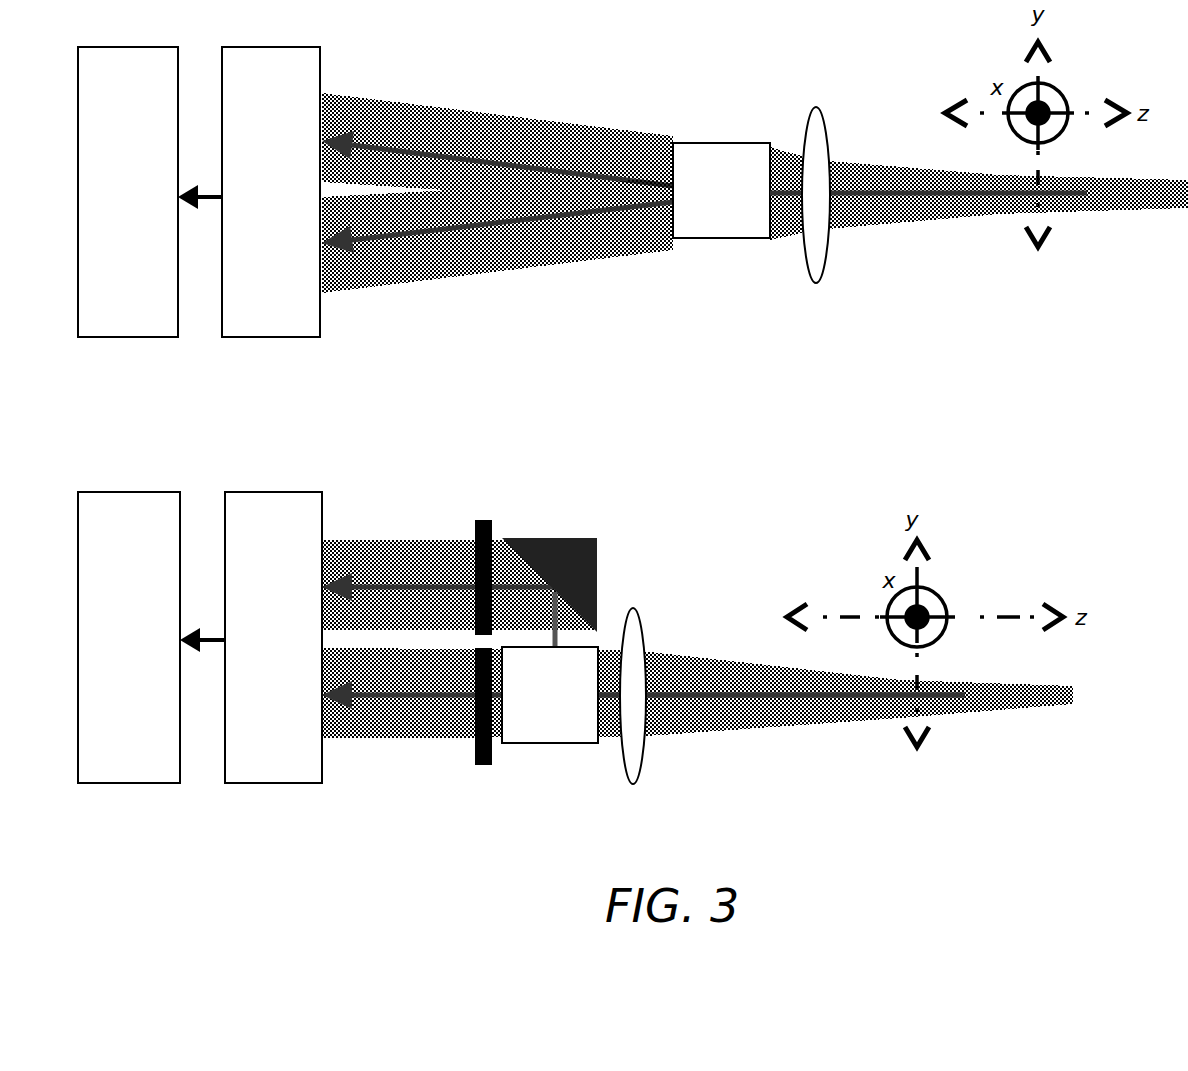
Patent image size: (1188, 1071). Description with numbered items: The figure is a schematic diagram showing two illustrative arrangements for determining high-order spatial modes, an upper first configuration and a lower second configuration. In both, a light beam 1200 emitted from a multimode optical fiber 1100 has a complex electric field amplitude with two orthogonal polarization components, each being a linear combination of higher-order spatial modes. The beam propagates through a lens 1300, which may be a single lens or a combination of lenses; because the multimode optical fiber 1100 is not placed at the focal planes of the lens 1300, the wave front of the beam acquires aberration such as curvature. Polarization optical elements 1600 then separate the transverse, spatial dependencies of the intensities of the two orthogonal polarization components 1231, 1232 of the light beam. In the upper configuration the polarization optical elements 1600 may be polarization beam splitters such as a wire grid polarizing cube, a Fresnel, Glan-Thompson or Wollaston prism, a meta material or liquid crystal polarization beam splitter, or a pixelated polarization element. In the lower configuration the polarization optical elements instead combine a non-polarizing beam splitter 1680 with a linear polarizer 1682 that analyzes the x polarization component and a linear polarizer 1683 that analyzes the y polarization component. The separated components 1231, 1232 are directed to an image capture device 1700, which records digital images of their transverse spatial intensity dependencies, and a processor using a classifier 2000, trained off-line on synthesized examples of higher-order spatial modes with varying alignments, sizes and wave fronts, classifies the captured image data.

The multimode optical fiber 1100 is at (891, 474).
The light beam emitted from the multimode optical fiber 1200 is at (888, 212).
The first orthogonal polarization component of the light beam 1231 is at (471, 135).
The second orthogonal polarization component of the light beam 1232 is at (472, 254).
The lens of the image capture device 1300 is at (817, 107).
The polarization optical elements 1600 is at (719, 141).
The non-polarizing beam splitter 1680 is at (550, 744).
The linear polarizer 1682 is at (495, 522).
The linear polarizer 1683 is at (490, 766).
The image capture device 1700 is at (272, 415).
The classifier 2000 is at (129, 415).